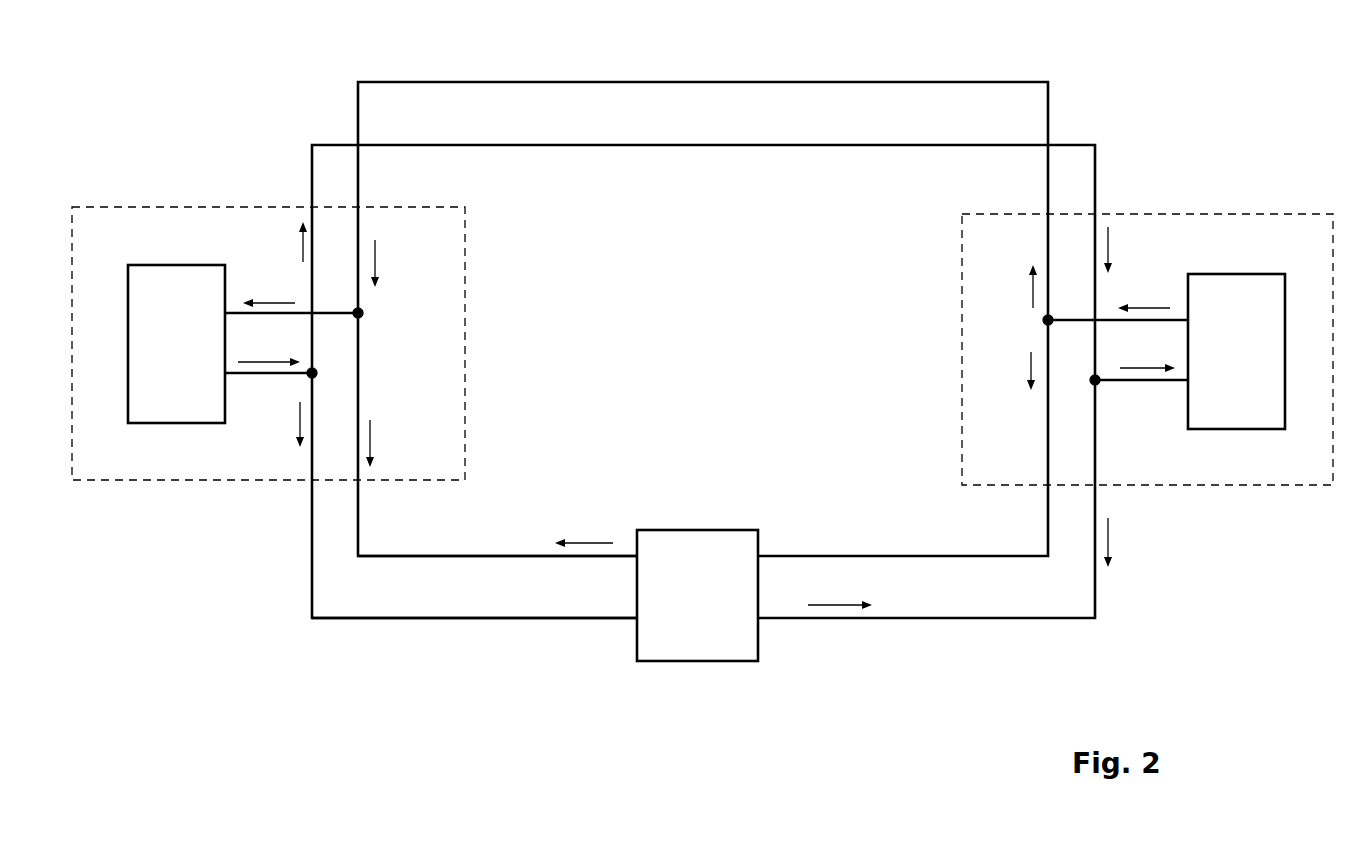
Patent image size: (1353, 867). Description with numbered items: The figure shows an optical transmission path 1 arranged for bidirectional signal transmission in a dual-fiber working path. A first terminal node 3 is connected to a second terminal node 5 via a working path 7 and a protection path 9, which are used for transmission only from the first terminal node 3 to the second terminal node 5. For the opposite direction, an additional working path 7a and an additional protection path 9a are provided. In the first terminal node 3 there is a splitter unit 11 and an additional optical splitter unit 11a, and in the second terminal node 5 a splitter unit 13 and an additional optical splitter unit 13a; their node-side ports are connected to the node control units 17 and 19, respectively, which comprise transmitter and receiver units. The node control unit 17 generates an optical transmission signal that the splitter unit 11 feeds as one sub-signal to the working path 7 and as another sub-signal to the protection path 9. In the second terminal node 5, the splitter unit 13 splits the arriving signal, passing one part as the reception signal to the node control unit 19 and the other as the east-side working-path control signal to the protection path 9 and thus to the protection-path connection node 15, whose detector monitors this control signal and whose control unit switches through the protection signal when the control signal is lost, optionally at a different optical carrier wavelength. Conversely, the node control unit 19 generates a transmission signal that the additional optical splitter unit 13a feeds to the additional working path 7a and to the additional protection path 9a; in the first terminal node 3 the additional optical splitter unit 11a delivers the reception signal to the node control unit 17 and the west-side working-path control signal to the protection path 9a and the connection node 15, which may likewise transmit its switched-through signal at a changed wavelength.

The optical transmission path 1 is at (708, 330).
The first terminal node 3 is at (200, 203).
The second terminal node 5 is at (1208, 211).
The working path 7 is at (568, 145).
The additional working path 7a is at (520, 82).
The protection path 9 is at (472, 618).
The additional protection path 9a is at (458, 556).
The splitter unit 11 is at (316, 373).
The additional optical splitter unit 11a is at (362, 313).
The splitter unit 13 is at (1097, 384).
The additional optical splitter unit 13a is at (1043, 325).
The protection-path connection node 15 is at (675, 543).
The node control unit 17 is at (193, 408).
The node control unit 19 is at (1253, 408).